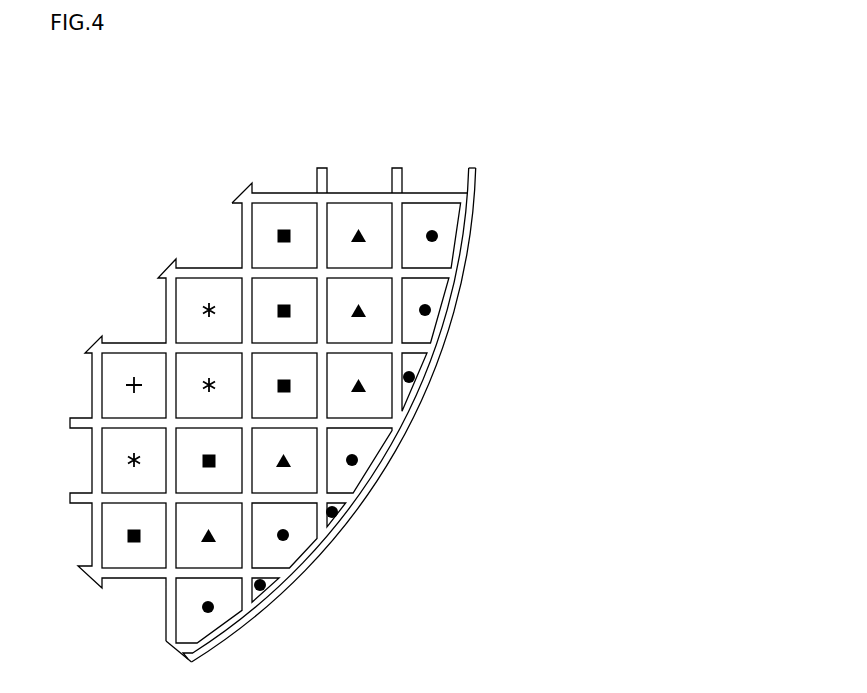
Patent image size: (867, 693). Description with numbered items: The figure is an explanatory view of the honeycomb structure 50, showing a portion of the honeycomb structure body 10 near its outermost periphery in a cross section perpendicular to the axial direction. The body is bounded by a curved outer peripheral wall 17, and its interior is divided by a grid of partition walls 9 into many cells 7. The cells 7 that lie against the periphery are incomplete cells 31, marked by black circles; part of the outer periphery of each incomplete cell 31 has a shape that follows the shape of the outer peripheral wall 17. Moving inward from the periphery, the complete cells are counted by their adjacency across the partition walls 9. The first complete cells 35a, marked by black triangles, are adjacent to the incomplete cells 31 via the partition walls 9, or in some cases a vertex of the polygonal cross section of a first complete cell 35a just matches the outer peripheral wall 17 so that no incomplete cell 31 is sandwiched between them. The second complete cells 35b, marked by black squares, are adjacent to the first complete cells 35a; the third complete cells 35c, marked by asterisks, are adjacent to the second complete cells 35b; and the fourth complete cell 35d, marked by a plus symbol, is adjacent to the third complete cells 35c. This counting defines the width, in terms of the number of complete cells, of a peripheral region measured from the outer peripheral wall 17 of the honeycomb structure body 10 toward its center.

The honeycomb structure 50 is at (515, 86).
The honeycomb structure body 10 is at (484, 164).
The outer peripheral wall 17 is at (470, 238).
The partition wall 9 is at (226, 267).
The cell 7 is at (195, 287).
The incomplete cell 31 is at (459, 423).
The first complete cell 35a is at (489, 385).
The second complete cell 35b is at (466, 385).
The third complete cell 35c is at (479, 490).
The fourth complete cell 35d is at (485, 505).